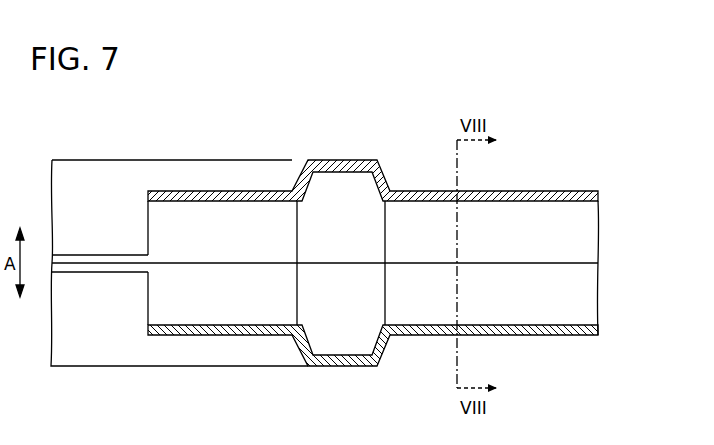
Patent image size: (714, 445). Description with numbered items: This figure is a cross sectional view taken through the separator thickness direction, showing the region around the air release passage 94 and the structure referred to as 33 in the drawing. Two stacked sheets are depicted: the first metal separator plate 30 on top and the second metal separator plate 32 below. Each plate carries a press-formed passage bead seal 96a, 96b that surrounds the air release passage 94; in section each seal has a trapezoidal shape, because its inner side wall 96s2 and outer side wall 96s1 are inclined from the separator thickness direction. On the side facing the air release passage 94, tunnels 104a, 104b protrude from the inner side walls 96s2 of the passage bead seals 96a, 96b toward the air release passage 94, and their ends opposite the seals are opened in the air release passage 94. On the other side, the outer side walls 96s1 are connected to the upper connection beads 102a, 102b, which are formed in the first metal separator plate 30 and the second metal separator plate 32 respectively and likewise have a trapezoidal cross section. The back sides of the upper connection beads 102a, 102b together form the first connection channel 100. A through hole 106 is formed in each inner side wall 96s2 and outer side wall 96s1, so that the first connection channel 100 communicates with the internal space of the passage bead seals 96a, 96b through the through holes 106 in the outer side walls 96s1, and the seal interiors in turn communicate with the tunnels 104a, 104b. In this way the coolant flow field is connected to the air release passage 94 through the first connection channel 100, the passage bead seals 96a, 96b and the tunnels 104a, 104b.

The heat exchanger / body portion 33 is at (82, 113).
The air release passage 94 is at (90, 255).
The passage bead seal 96a is at (123, 160).
The passage bead seal 96b is at (123, 367).
The outer side wall 96s1 is at (388, 181).
The inner side wall 96s2 is at (293, 183).
The tunnel 104a is at (197, 190).
The tunnel 104b is at (196, 337).
The through hole 106 is at (297, 226).
The upper connection bead 102a is at (530, 190).
The upper connection bead 102b is at (528, 338).
The first metal separator plate 30 is at (577, 190).
The second metal separator plate 32 is at (577, 337).
The first connection channel 100 is at (580, 237).